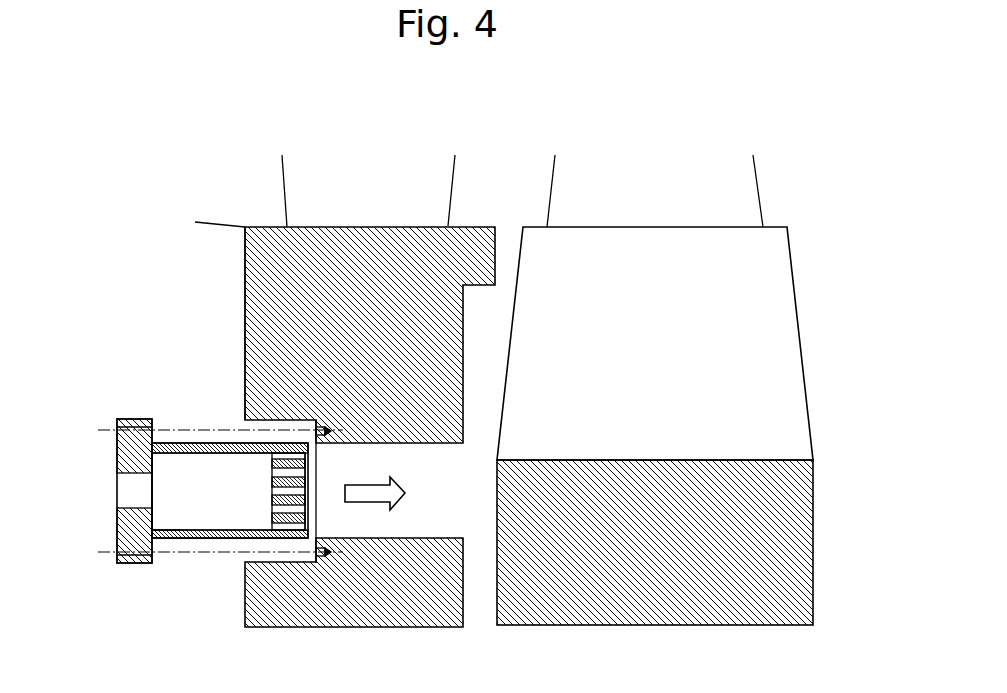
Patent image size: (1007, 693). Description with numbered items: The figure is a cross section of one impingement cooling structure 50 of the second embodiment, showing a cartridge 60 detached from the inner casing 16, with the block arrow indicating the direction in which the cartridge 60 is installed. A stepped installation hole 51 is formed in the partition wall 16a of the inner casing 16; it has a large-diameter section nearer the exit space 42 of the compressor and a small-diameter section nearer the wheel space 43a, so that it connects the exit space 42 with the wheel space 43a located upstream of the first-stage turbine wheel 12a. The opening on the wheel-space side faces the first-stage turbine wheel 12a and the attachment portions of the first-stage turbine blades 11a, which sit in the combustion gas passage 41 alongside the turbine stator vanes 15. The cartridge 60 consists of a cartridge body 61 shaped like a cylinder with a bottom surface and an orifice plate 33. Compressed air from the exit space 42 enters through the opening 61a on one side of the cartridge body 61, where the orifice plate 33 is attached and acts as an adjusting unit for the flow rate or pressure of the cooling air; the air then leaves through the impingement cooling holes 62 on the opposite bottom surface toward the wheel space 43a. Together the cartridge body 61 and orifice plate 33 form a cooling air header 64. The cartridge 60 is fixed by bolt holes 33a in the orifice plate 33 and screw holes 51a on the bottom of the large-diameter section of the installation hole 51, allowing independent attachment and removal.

The first-stage turbine blade 11a is at (737, 200).
The first-stage turbine wheel 12a is at (788, 570).
The turbine stator vane 15 is at (418, 202).
The inner casing 16 is at (270, 220).
The partition wall 16a is at (268, 287).
The orifice plate 33 is at (130, 455).
The bolt hole 33a is at (128, 554).
The passage 41 is at (522, 198).
The exit space 42 is at (193, 312).
The wheel space 43a is at (480, 377).
The impingement cooling structure 50 is at (147, 380).
The stepped installation hole 51 is at (372, 540).
The screw hole 51a is at (335, 552).
The cartridge 60 is at (197, 440).
The cartridge body 61 is at (233, 535).
The opening 61a is at (153, 530).
The impingement cooling holes 62 is at (280, 527).
The cooling air header 64 is at (218, 480).